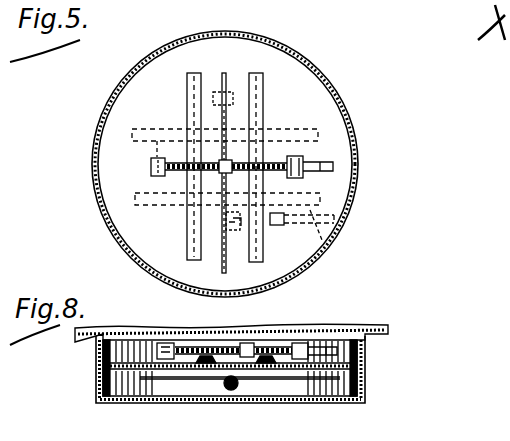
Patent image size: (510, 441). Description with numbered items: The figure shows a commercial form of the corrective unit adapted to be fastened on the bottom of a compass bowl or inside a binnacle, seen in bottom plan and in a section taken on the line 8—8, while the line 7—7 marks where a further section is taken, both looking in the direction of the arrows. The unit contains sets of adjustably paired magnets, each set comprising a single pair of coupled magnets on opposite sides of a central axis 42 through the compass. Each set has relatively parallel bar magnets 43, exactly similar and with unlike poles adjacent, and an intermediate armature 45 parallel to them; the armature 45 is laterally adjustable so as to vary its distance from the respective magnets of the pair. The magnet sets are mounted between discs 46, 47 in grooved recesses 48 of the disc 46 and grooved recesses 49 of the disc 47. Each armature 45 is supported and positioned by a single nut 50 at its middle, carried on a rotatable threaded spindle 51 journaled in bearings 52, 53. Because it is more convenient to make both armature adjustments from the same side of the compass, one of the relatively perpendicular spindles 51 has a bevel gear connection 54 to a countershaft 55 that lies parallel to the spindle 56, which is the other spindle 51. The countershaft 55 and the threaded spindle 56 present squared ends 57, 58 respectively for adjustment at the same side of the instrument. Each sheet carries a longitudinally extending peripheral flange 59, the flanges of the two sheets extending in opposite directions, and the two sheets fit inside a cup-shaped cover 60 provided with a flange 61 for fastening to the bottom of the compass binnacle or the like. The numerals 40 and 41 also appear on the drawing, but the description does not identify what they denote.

In FIG. 5, the section line 7— 7 is at (224, 22).
In FIG. 5, the section line 8— 8 is at (100, 167).
In FIG. 5, the magnet bars 40 is at (201, 78).
In FIG. 5, the shaft bearing block 41 is at (150, 165).
In FIG. 5, the central axis 42 is at (222, 173).
In FIG. 5, the bar magnet 43 is at (187, 107).
In FIG. 8, the bar magnet 43 is at (206, 364).
In FIG. 5, the intermediate armature 45 is at (250, 262).
In FIG. 8, the intermediate armature 45 is at (286, 345).
In FIG. 8, the disc 46 is at (368, 344).
In FIG. 8, the disc 47 is at (366, 377).
In FIG. 8, the grooved recess 48 is at (200, 360).
In FIG. 8, the grooved recess 49 is at (232, 390).
In FIG. 5, the nut 50 is at (232, 162).
In FIG. 8, the nut 50 is at (250, 343).
In FIG. 5, the threaded spindle 51 is at (283, 158).
In FIG. 8, the threaded spindle 51 is at (182, 346).
In FIG. 5, the bearing 52 is at (152, 130).
In FIG. 8, the bearing 52 is at (153, 338).
In FIG. 5, the bearing 53 is at (308, 186).
In FIG. 8, the bearing 53 is at (338, 332).
In FIG. 5, the bevel gear connection 54 is at (276, 226).
In FIG. 5, the countershaft 55 is at (324, 245).
In FIG. 5, the threaded spindle 56 is at (282, 178).
In FIG. 5, the squared end 57 is at (336, 220).
In FIG. 5, the squared end 58 is at (345, 150).
In FIG. 8, the squared end 58 is at (360, 338).
In FIG. 8, the peripheral flange 59 is at (98, 350).
In FIG. 8, the cup-shaped cover 60 is at (118, 403).
In FIG. 8, the flange 61 is at (376, 342).